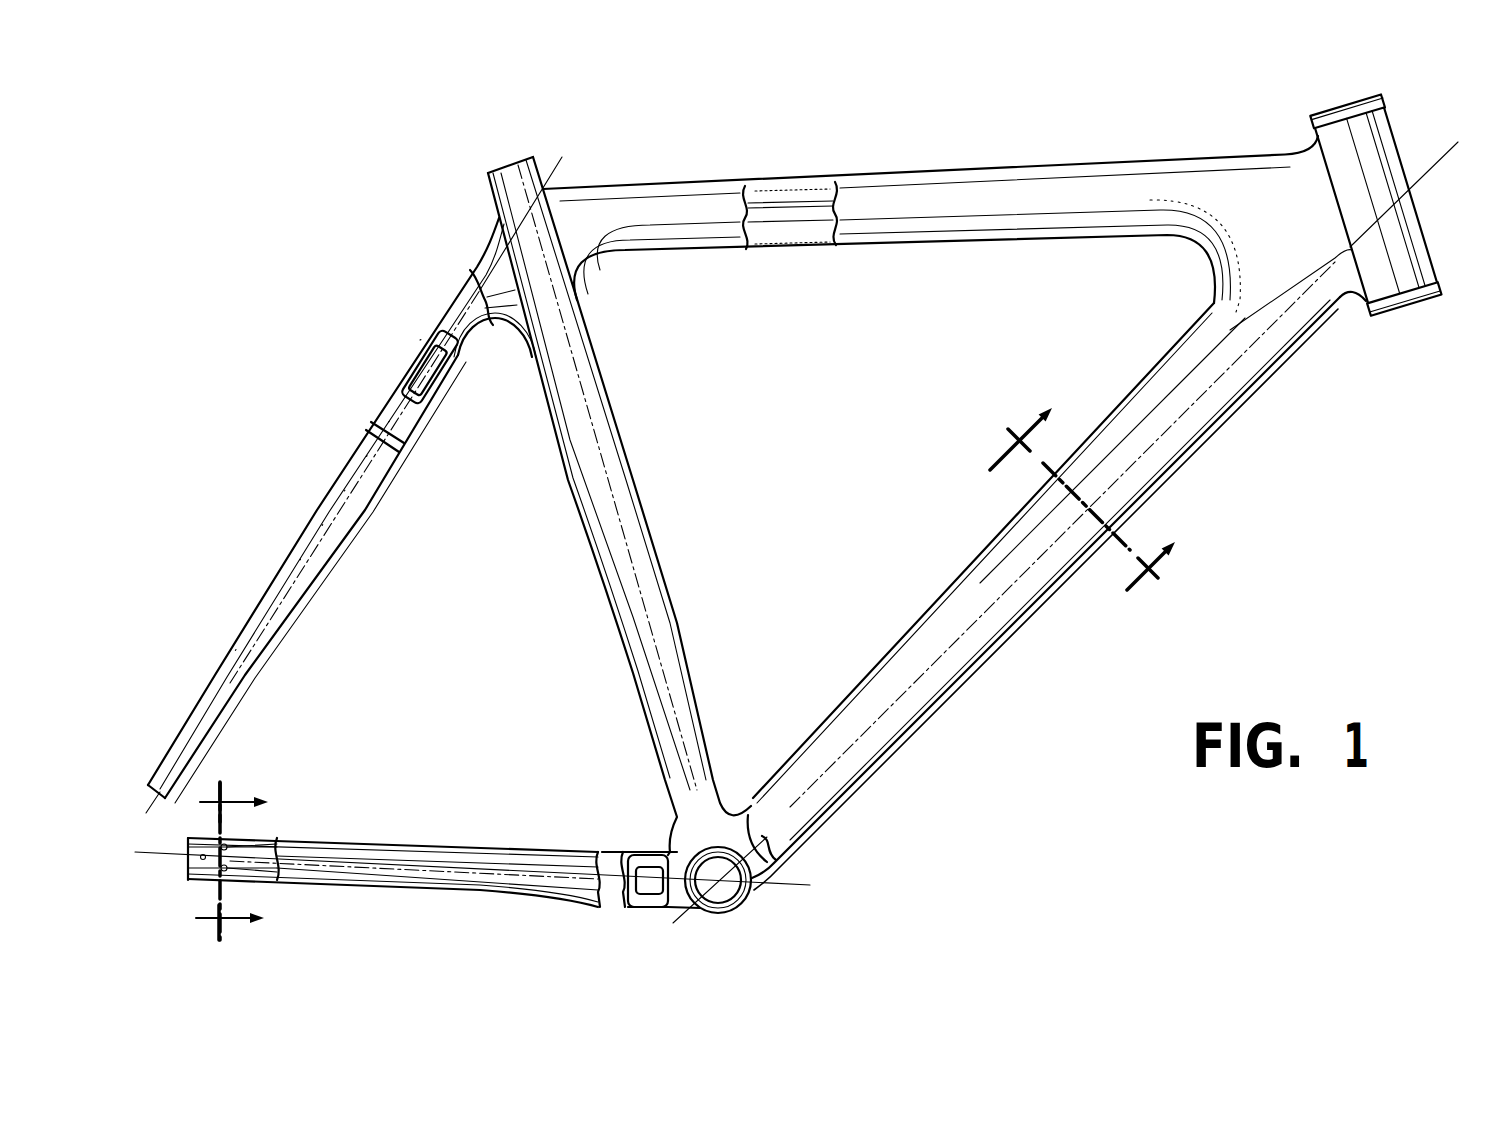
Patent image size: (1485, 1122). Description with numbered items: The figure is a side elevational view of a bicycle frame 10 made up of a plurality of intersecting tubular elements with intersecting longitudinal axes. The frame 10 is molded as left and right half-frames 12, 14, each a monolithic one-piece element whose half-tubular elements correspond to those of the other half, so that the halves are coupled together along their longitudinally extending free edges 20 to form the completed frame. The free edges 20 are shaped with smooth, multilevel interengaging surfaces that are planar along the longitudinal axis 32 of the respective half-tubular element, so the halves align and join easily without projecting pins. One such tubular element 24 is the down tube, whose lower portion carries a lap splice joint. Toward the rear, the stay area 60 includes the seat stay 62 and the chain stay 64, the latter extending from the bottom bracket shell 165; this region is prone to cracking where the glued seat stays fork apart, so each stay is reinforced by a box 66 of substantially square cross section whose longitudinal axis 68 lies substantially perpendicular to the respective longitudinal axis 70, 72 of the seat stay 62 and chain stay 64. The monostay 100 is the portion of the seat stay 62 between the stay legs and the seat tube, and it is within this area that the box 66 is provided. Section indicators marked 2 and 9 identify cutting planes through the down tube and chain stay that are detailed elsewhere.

The bicycle frame 10 is at (796, 529).
The left half-frame 12 is at (393, 414).
The right half-frame 14 is at (390, 452).
The longitudinal free edges 20 is at (810, 186).
The tubular element (down tube) 24 is at (1124, 420).
The longitudinal axis 32 is at (1258, 343).
The stay area 60 is at (300, 512).
The seat stay 62 is at (420, 318).
The chain stay 64 is at (430, 855).
The box 66 is at (437, 378).
The longitudinal axis of box 68 is at (425, 358).
The longitudinal axis of seat stay 70 is at (262, 613).
The longitudinal axis of chain stay 72 is at (382, 865).
The monostay 100 is at (488, 262).
The bottom bracket shell 165 is at (800, 841).
The section line 2- 2 is at (1074, 515).
The section line 9- 9 is at (243, 861).